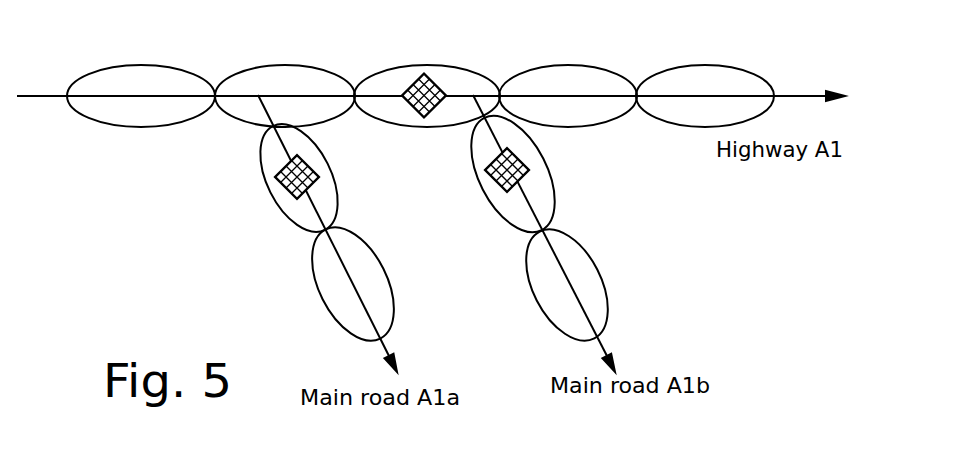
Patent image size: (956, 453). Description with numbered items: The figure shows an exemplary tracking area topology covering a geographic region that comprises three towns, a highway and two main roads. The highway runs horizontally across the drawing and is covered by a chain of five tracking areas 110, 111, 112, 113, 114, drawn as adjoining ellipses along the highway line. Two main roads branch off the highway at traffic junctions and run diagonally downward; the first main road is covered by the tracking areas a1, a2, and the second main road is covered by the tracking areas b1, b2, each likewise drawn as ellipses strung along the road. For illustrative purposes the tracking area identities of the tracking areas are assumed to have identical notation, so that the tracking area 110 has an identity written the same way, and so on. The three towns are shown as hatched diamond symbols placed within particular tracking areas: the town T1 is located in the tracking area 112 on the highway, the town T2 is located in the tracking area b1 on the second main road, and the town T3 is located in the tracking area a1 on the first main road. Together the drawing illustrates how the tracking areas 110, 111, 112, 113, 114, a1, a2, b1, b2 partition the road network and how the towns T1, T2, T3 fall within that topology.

The tracking area 110 is at (93, 68).
The tracking area 111 is at (222, 78).
The tracking area 112 is at (377, 70).
The tracking area 113 is at (558, 67).
The tracking area 114 is at (699, 68).
The town T1 is at (435, 75).
The town T2 is at (530, 162).
The town T3 is at (272, 180).
The tracking area a1 is at (295, 232).
The tracking area a2 is at (327, 307).
The tracking area b1 is at (515, 232).
The tracking area b2 is at (545, 308).